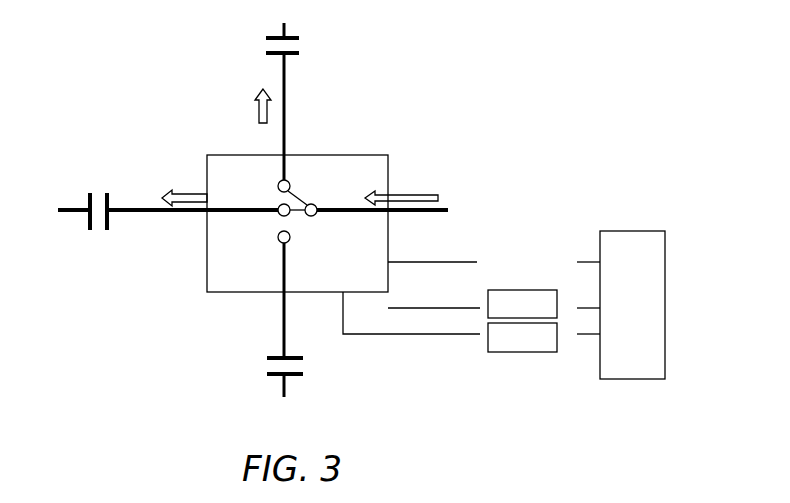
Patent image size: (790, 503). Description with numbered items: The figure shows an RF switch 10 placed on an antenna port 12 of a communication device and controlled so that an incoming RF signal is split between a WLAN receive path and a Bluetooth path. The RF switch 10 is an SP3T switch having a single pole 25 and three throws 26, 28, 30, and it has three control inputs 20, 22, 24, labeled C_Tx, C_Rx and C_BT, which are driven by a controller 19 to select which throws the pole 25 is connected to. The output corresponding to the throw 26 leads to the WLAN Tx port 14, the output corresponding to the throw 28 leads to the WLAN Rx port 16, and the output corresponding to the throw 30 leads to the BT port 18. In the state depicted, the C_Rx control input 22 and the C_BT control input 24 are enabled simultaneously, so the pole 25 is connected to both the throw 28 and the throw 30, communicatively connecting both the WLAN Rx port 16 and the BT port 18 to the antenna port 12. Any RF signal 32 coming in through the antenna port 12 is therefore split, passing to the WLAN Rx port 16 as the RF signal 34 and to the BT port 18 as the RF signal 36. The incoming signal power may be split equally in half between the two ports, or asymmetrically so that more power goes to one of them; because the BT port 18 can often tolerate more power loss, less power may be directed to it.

The RF switch 10 is at (370, 155).
The antenna port 12 is at (450, 208).
The WLAN transmit (Tx) port 14 is at (292, 378).
The WLAN receive (Rx) port 16 is at (90, 222).
The BT port 18 is at (290, 38).
The controller 19 is at (613, 231).
The control input C_Tx 20 is at (457, 262).
The control input C_Rx 22 is at (433, 307).
The control input C_BT 24 is at (425, 336).
The pole 25 is at (316, 215).
The throw 26 is at (278, 238).
The throw 28 is at (278, 204).
The throw 30 is at (290, 184).
The RF signal 32 is at (414, 195).
The RF signal 34 is at (190, 192).
The RF signal 36 is at (255, 117).